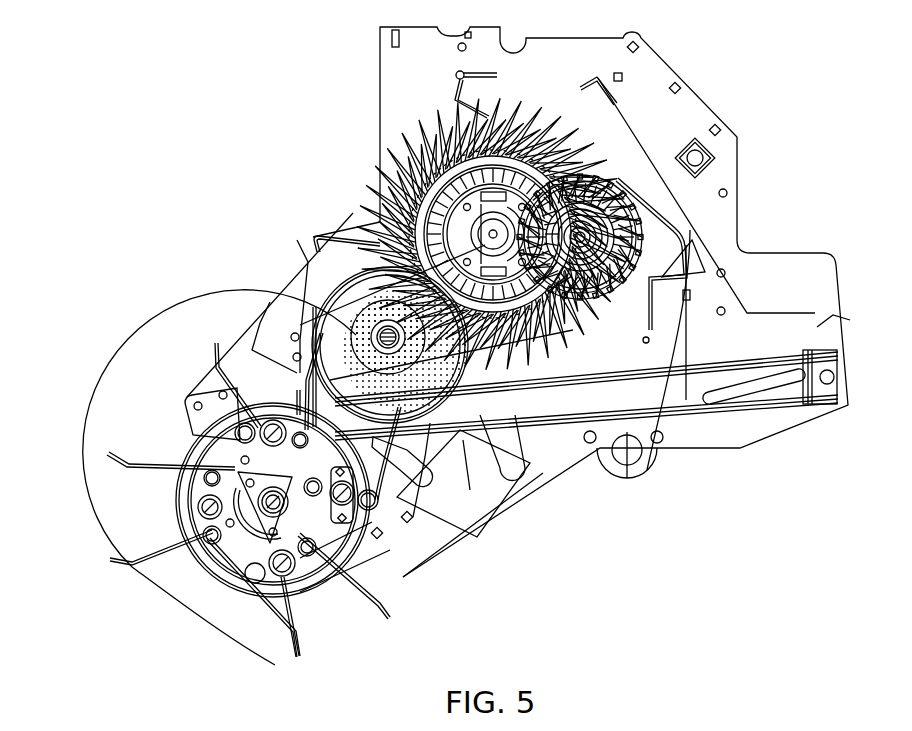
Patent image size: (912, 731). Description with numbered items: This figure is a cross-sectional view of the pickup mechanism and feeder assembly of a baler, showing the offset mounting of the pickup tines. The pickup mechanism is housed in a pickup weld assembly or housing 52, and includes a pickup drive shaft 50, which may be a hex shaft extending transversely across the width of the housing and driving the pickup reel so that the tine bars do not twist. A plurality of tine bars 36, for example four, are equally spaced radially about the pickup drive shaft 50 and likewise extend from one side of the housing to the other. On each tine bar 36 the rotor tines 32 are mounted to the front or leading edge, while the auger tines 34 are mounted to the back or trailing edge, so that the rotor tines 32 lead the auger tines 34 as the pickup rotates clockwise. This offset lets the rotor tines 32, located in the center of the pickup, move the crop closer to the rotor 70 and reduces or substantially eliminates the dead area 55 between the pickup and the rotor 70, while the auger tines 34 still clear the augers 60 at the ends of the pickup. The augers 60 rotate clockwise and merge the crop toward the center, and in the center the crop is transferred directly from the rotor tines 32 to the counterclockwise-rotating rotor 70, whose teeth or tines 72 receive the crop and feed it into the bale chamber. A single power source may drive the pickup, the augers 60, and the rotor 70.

The rotor tines or teeth 72 is at (437, 118).
The rotor 70 is at (400, 140).
The auger 60 is at (345, 332).
The dead area 55 is at (357, 323).
The pickup weld assembly or housing 52 is at (119, 372).
The pickup drive shaft 50 is at (258, 560).
The tine bar 36 is at (198, 507).
The rotor tines 32 is at (268, 424).
The auger tines 34 is at (210, 352).